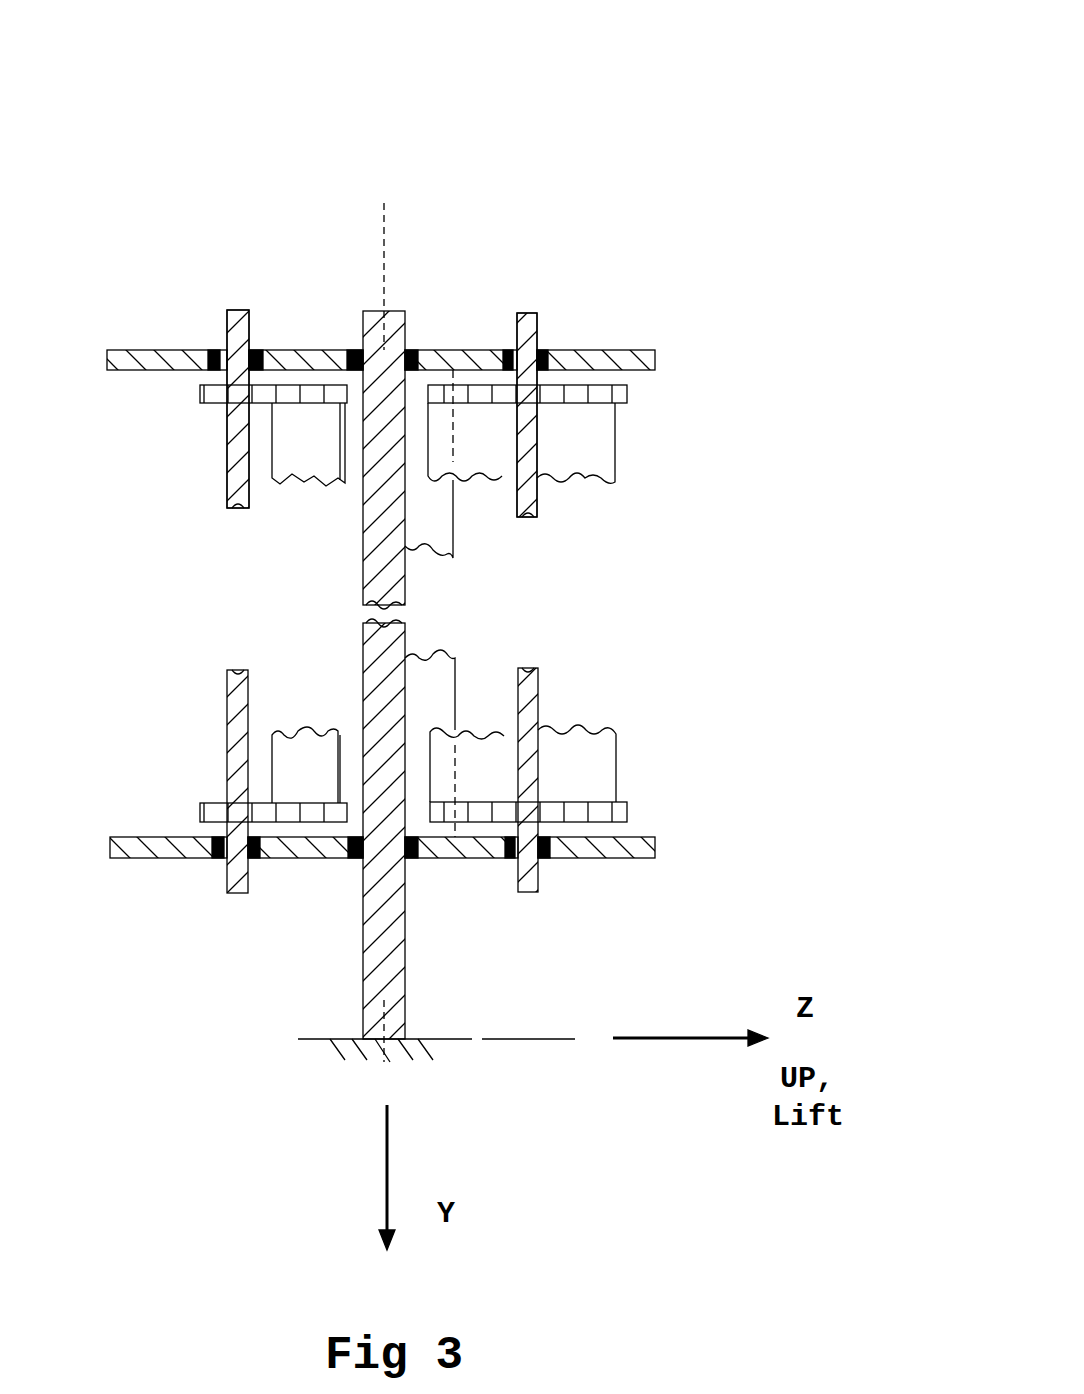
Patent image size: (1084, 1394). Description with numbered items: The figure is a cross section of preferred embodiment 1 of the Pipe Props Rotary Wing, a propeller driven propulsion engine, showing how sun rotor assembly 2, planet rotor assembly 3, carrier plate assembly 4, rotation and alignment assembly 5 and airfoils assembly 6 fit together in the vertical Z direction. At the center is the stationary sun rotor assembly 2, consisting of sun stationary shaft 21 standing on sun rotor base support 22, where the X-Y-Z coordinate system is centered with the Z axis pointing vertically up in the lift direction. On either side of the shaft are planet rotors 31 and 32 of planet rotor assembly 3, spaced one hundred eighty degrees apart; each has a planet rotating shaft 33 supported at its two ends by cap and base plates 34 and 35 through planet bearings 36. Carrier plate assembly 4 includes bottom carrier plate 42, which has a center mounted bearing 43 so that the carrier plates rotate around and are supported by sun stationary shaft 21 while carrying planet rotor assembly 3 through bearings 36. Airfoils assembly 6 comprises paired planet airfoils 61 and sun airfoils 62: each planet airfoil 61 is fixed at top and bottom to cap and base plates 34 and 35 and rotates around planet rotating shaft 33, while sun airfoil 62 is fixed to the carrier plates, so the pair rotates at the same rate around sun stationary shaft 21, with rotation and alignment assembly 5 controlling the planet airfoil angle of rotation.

The preferred embodiment 1 is at (852, 70).
The sun rotor assembly 2 is at (828, 214).
The planet rotor assembly 3 is at (828, 214).
The carrier plate assembly 4 is at (872, 153).
The rotation and alignment assembly 5 is at (872, 153).
The airfoils assembly 6 is at (872, 153).
The sun stationary shaft 21 is at (380, 313).
The sun rotor base support 22 is at (383, 1038).
The planet rotor 31 is at (522, 313).
The planet rotor 32 is at (227, 313).
The planet rotating shaft 33 is at (376, 366).
The cap plate 34 is at (200, 395).
The base plate 35 is at (200, 805).
The planet bearing 36 is at (220, 350).
The bottom carrier plate 42 is at (595, 858).
The center mounted bearing 43 is at (413, 353).
The planet airfoil 61 is at (297, 477).
The sun airfoil 62 is at (433, 558).